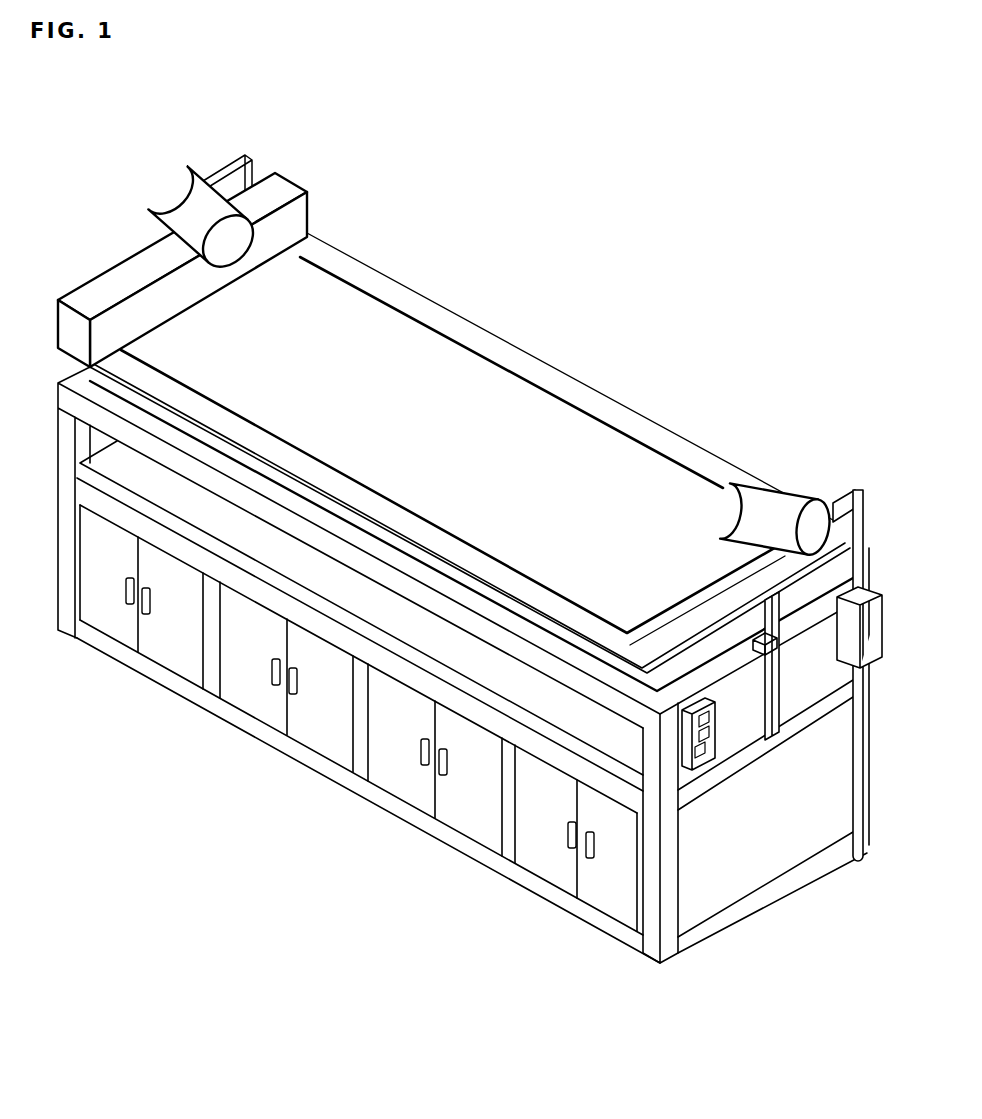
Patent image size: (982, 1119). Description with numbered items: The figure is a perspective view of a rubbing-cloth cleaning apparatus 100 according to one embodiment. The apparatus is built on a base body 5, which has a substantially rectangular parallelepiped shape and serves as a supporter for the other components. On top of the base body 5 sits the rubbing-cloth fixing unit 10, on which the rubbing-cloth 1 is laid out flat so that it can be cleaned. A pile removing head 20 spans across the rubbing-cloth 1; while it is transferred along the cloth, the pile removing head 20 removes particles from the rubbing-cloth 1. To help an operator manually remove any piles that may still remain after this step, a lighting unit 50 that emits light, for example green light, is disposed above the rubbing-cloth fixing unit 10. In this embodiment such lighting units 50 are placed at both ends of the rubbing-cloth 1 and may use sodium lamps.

The rubbing-cloth cleaning apparatus 100 is at (470, 525).
The rubbing-cloth 1 is at (422, 357).
The base body 5 is at (347, 820).
The rubbing-cloth fixing unit 10 is at (553, 377).
The pile removing head 20 is at (316, 159).
The lighting unit 50 is at (782, 502).